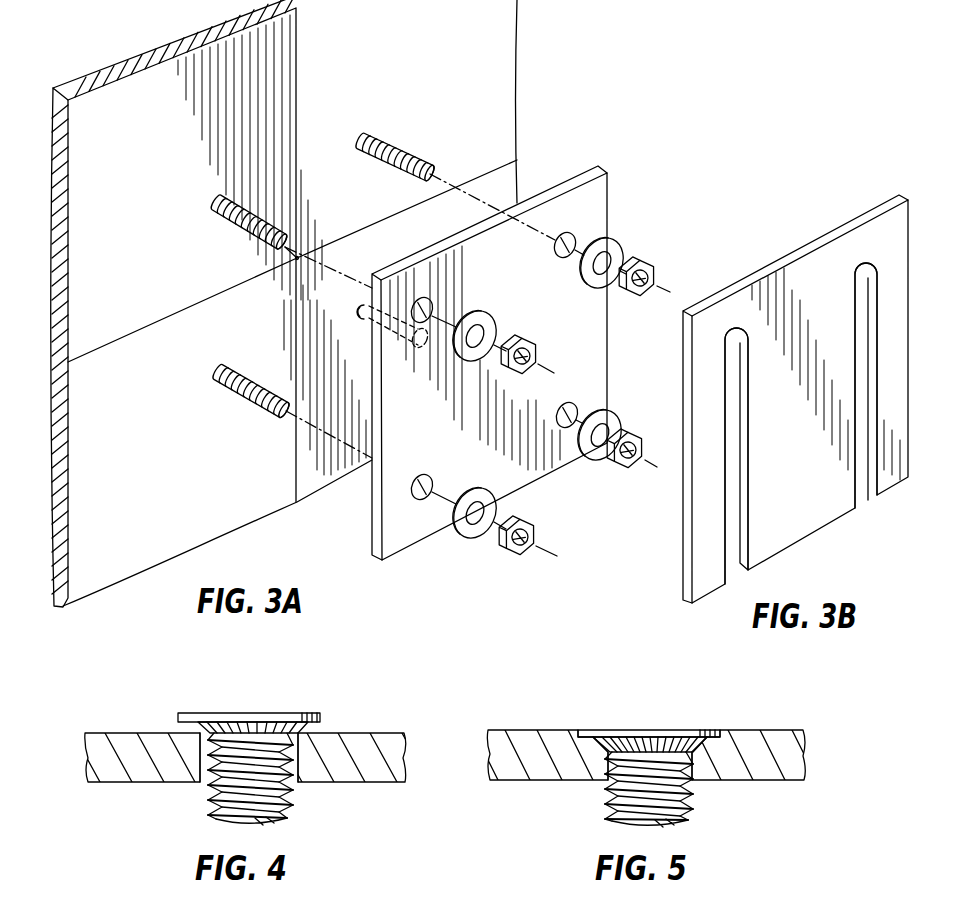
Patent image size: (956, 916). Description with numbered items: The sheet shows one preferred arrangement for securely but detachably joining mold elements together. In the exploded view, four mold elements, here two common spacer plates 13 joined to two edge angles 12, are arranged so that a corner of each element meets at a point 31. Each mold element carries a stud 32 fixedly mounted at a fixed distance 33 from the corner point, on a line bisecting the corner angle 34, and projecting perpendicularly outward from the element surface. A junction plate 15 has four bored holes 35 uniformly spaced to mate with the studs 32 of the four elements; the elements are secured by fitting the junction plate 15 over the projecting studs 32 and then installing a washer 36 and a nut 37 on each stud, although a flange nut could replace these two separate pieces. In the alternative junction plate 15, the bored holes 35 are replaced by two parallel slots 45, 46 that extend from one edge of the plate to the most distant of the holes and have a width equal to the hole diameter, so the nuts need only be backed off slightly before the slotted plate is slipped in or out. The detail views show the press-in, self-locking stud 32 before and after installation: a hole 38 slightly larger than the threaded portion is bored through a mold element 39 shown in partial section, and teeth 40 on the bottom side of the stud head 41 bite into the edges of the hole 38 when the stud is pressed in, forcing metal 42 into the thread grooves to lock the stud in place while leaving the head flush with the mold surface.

In FIG. 3A, the edge angle 12 is at (182, 468).
In FIG. 3A, the spacer plate 13 is at (183, 186).
In FIG. 3A, the junction plate 15 is at (598, 345).
In FIG. 3B, the junction plate 15 is at (818, 262).
In FIG. 3A, the point 31 is at (296, 258).
In FIG. 3A, the stud 32 is at (228, 225).
In FIG. 4, the stud 32 is at (208, 793).
In FIG. 5, the stud 32 is at (698, 803).
In FIG. 3A, the fixed distance 33 is at (295, 261).
In FIG. 3A, the corner angle 34 is at (348, 235).
In FIG. 3A, the bored hole 35 is at (554, 247).
In FIG. 3A, the washer 36 is at (616, 246).
In FIG. 3A, the nut 37 is at (651, 265).
In FIG. 4, the hole 38 is at (300, 772).
In FIG. 4, the mold element 39 is at (372, 772).
In FIG. 5, the mold element 39 is at (523, 743).
In FIG. 4, the teeth 40 is at (308, 727).
In FIG. 5, the teeth 40 is at (714, 742).
In FIG. 4, the stud head 41 is at (288, 713).
In FIG. 5, the stud head 41 is at (626, 736).
In FIG. 5, the metal 42 is at (603, 778).
In FIG. 3B, the slot 45 is at (862, 355).
In FIG. 3B, the slot 46 is at (735, 441).